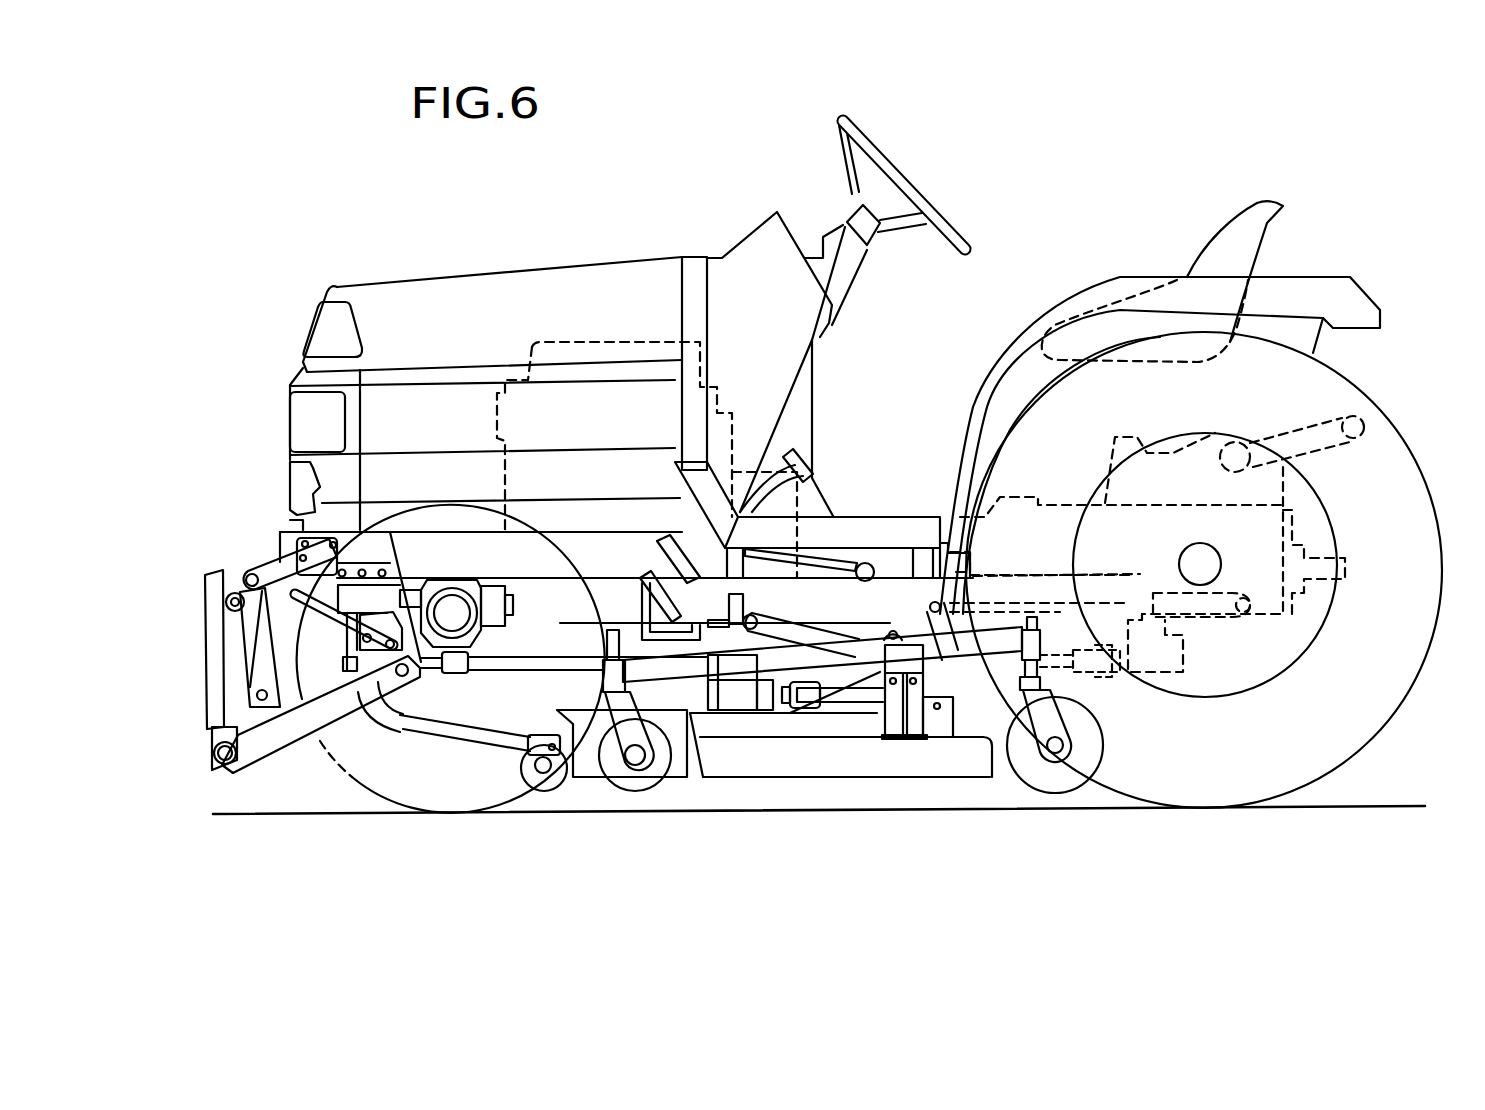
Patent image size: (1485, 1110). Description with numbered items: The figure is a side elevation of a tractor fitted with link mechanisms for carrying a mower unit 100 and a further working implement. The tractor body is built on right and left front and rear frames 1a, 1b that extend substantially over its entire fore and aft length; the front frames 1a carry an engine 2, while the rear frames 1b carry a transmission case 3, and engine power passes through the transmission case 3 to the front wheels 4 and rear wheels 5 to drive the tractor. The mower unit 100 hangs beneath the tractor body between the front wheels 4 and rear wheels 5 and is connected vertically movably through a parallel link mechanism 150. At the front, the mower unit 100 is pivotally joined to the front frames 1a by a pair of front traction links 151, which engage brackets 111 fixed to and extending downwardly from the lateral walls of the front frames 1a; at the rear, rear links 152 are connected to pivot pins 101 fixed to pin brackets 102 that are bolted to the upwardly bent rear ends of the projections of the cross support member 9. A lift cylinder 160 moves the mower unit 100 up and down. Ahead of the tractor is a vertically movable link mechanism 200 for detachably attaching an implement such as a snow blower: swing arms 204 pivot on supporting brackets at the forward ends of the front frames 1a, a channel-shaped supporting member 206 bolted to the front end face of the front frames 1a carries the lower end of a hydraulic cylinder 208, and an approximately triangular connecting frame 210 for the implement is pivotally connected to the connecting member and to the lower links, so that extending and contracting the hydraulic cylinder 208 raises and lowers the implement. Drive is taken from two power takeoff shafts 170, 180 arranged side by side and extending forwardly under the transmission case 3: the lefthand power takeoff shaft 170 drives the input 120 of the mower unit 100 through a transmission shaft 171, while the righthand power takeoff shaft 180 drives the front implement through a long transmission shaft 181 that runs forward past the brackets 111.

The front frames 1a is at (552, 570).
The rear frames 1b is at (893, 585).
The engine 2 is at (578, 340).
The transmission case 3 is at (1062, 503).
The front wheels 4 is at (345, 770).
The rear wheels 5 is at (1352, 742).
The cross support member 9 is at (613, 633).
The mower unit 100 is at (831, 779).
The pivot pins 101 is at (752, 617).
The pin brackets 102 is at (730, 682).
The brackets 111 is at (380, 598).
The input 120 is at (743, 698).
The parallel link mechanism 150 is at (466, 747).
The front traction links 151 is at (597, 720).
The rear links 152 is at (800, 640).
The lift cylinder 160 is at (1222, 598).
The lefthand power takeoff shaft 170 is at (1142, 706).
The righthand power takeoff shaft 180 is at (1126, 676).
The transmission shaft 171 is at (968, 673).
The long transmission shaft 181 is at (538, 665).
The link mechanism 200 is at (285, 676).
The swing arms 204 is at (251, 574).
The channel-shaped supporting member 206 is at (266, 672).
The hydraulic cylinder 208 is at (250, 626).
The connecting frame 210 is at (215, 706).